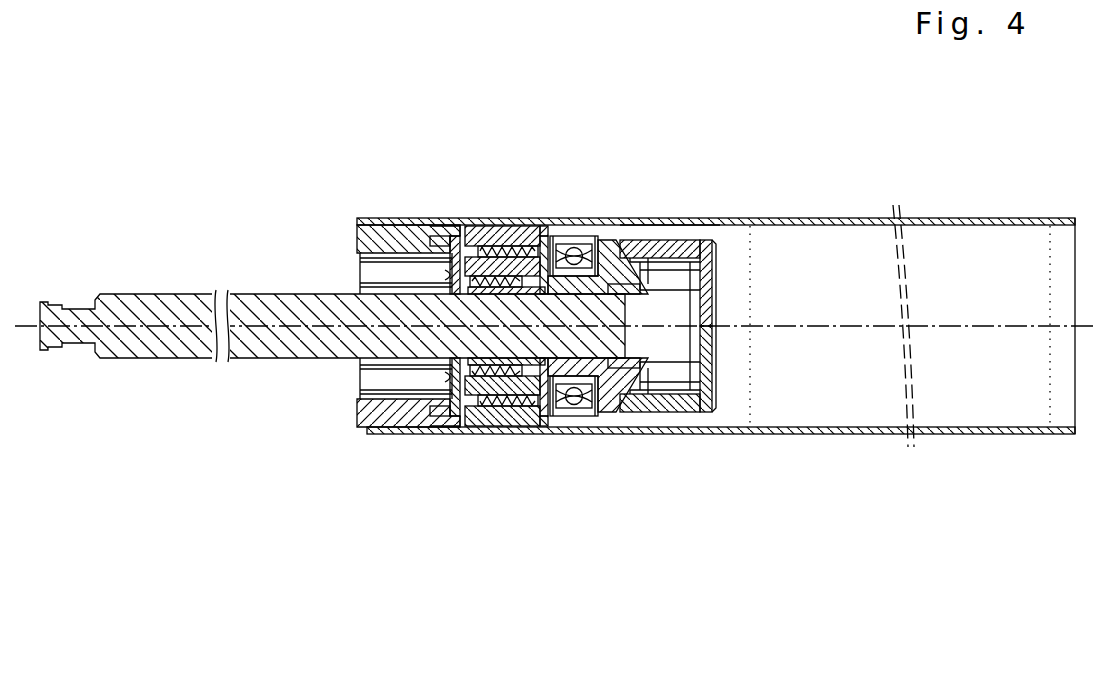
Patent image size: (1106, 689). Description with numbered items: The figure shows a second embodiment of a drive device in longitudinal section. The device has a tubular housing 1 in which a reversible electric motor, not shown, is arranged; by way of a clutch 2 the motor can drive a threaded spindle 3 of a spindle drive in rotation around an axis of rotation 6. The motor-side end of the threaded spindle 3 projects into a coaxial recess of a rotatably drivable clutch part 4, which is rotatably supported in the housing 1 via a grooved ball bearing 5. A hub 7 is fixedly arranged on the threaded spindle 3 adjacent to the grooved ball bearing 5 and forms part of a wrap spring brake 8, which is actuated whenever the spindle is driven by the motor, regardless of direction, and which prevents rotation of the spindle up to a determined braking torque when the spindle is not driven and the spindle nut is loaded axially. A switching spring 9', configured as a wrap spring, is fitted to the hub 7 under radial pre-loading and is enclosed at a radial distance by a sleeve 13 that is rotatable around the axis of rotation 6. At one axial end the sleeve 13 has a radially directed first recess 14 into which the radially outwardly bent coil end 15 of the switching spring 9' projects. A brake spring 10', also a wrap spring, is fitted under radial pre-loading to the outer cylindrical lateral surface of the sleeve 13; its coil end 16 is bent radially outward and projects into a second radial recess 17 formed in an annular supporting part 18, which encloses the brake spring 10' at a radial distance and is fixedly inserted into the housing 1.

The tubular housing 1 is at (960, 218).
The clutch 2 is at (678, 230).
The threaded spindle 3 is at (110, 294).
The clutch part 4 is at (637, 240).
The grooved ball bearing 5 is at (571, 228).
The axis of rotation 6 is at (176, 326).
The hub 7 is at (410, 431).
The wrap spring brake 8 is at (536, 430).
The switching spring 9' is at (480, 396).
The brake spring 10' is at (602, 405).
The sleeve 13 is at (610, 430).
The first recess 14 is at (458, 230).
The coil end 15 is at (455, 236).
The coil end 16 is at (530, 228).
The second radial recess 17 is at (542, 228).
The supporting part 18 is at (500, 435).